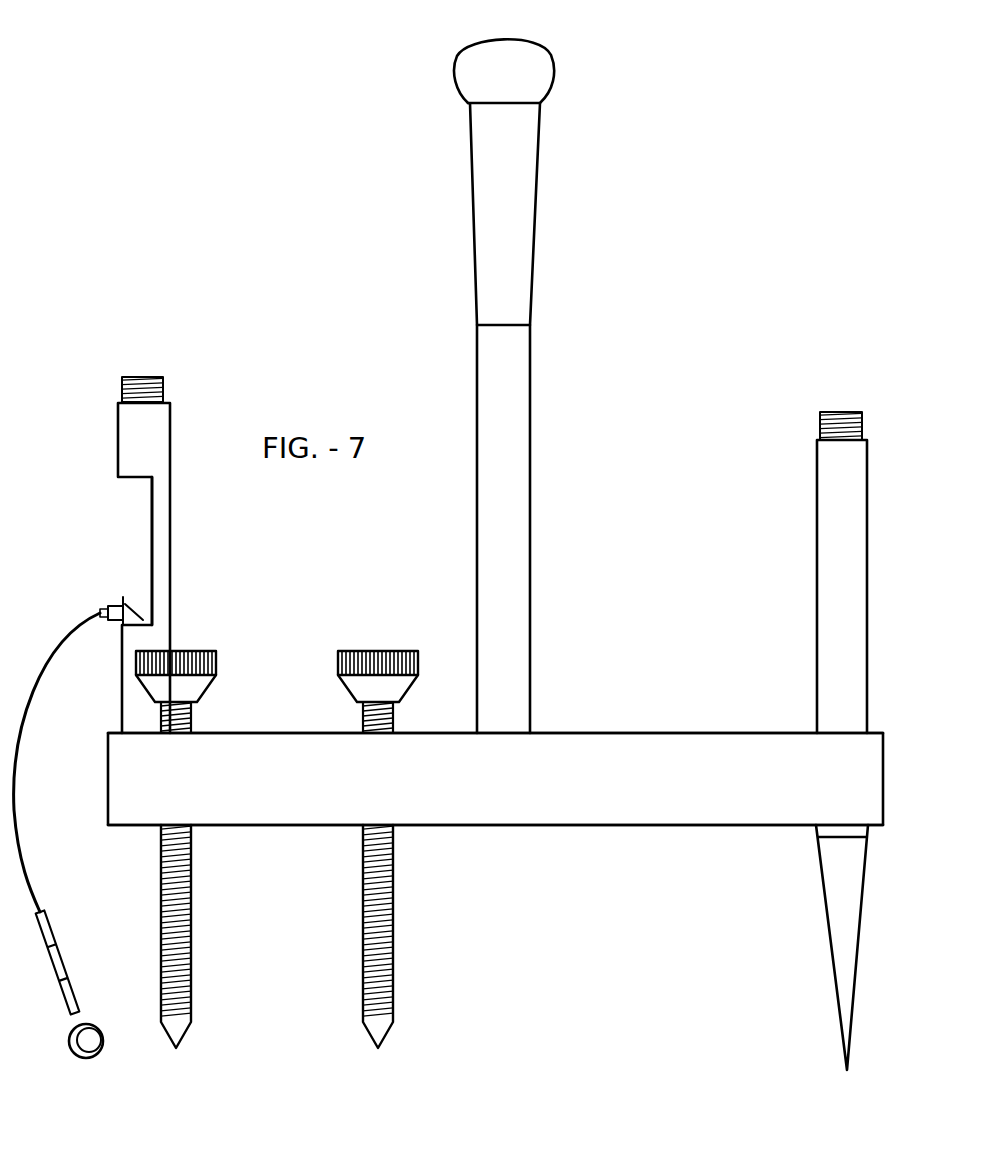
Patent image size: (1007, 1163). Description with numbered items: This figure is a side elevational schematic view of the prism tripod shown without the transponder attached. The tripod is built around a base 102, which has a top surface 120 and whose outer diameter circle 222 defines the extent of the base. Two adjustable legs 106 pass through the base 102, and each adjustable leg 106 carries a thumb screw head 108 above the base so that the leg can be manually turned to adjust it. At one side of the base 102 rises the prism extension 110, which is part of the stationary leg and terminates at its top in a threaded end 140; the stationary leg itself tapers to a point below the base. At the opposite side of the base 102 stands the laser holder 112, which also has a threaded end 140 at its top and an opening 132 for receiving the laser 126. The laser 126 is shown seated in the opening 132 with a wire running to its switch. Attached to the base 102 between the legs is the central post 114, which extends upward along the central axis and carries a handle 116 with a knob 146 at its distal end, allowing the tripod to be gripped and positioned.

The base 102 is at (683, 805).
The adjustable legs 106 is at (198, 1002).
The thumb screw head 108 is at (195, 650).
The prism extension 110 is at (837, 527).
The laser holder 112 is at (135, 455).
The central post 114 is at (497, 398).
The handle 116 is at (496, 206).
The top surface 120 is at (650, 742).
The laser 126 is at (122, 600).
The opening 132 is at (128, 542).
The threaded end 140 is at (123, 380).
The knob 146 is at (530, 82).
The outer diameter circle 222 is at (551, 800).